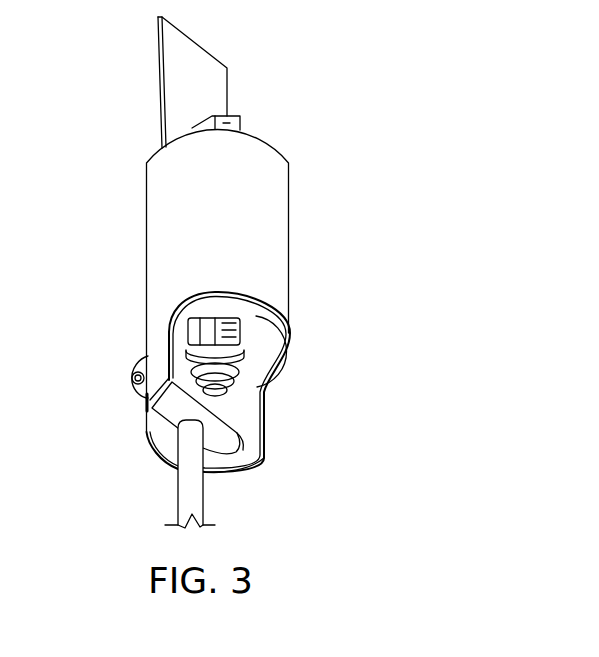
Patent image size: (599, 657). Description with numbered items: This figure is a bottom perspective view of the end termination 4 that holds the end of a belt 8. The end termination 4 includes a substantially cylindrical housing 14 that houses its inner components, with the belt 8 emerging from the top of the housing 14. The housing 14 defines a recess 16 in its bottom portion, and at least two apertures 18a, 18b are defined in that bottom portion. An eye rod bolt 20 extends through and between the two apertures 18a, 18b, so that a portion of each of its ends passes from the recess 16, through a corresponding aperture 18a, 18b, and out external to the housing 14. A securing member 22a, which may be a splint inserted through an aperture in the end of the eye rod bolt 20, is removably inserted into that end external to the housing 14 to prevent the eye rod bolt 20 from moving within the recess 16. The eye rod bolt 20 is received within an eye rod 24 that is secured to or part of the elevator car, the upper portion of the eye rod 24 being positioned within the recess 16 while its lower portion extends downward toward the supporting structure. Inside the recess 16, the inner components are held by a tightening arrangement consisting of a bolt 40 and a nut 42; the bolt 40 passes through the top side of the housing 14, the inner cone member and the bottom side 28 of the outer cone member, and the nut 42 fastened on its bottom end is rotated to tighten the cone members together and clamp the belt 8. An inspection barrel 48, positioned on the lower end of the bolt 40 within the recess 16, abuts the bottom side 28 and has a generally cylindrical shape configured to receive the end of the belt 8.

The end termination 4 is at (374, 209).
The belt 8 is at (207, 76).
The housing 14 is at (242, 175).
The recess 16 is at (245, 413).
The aperture 18a is at (152, 359).
The aperture 18b is at (243, 475).
The eye rod bolt 20 is at (245, 443).
The securing member 22a is at (141, 402).
The eye rod 24 is at (190, 491).
The bottom side of the outer cone member 28 is at (257, 347).
The bolt 40 is at (240, 118).
The nut 42 is at (258, 397).
The inspection barrel 48 is at (246, 331).